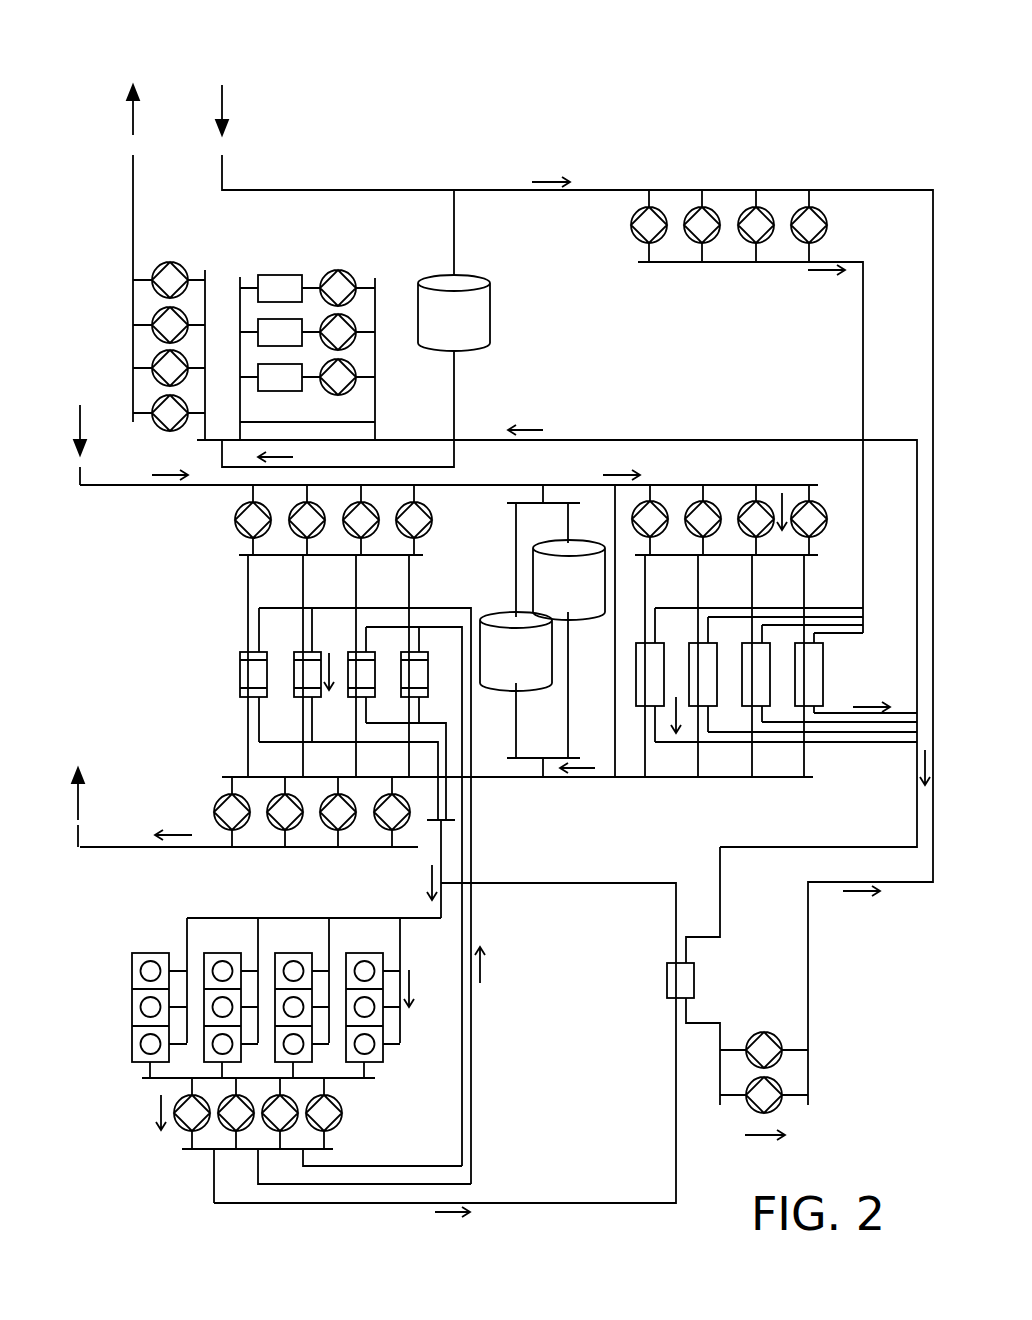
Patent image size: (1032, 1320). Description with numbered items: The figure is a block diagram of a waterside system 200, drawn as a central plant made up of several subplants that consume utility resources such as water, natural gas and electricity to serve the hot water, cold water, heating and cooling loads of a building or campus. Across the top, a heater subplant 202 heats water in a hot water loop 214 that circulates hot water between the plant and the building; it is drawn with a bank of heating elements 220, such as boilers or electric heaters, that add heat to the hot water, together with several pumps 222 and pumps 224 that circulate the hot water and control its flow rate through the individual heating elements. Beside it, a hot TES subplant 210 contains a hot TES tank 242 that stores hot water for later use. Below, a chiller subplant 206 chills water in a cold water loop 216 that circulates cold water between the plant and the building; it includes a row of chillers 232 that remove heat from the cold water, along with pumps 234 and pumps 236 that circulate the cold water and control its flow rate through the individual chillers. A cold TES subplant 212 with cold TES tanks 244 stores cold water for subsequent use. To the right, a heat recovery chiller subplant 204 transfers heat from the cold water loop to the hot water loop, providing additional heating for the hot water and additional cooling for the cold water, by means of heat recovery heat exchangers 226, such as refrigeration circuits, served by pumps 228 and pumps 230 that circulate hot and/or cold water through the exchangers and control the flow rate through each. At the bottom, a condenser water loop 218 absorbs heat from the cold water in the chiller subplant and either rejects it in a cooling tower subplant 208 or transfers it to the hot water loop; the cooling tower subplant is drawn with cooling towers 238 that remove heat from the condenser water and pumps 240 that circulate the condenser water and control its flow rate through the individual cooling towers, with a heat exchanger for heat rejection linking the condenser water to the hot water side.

The waterside system 200 is at (790, 60).
The heater subplant 202 is at (404, 176).
The heat recovery chiller subplant 204 is at (851, 767).
The chiller subplant 206 is at (188, 595).
The cooling tower subplant 208 is at (104, 985).
The hot thermal energy storage subplant 210 is at (517, 331).
The cold thermal energy storage subplant 212 is at (487, 560).
The hot water loop 214 is at (133, 197).
The cold water loop 216 is at (133, 487).
The condenser water loop 218 is at (658, 1205).
The heating elements 220 is at (268, 274).
The pumps 222 is at (177, 264).
The pumps 224 is at (348, 262).
The heat recovery heat exchangers 226 is at (823, 670).
The pumps 228 is at (823, 500).
The pumps 230 is at (830, 220).
The chillers 232 is at (240, 665).
The pumps 234 is at (214, 804).
The pumps 236 is at (226, 515).
The cooling towers 238 is at (386, 1052).
The pumps 240 is at (343, 1120).
The hot TES tank 242 is at (483, 297).
The cold TES tanks 244 is at (552, 544).